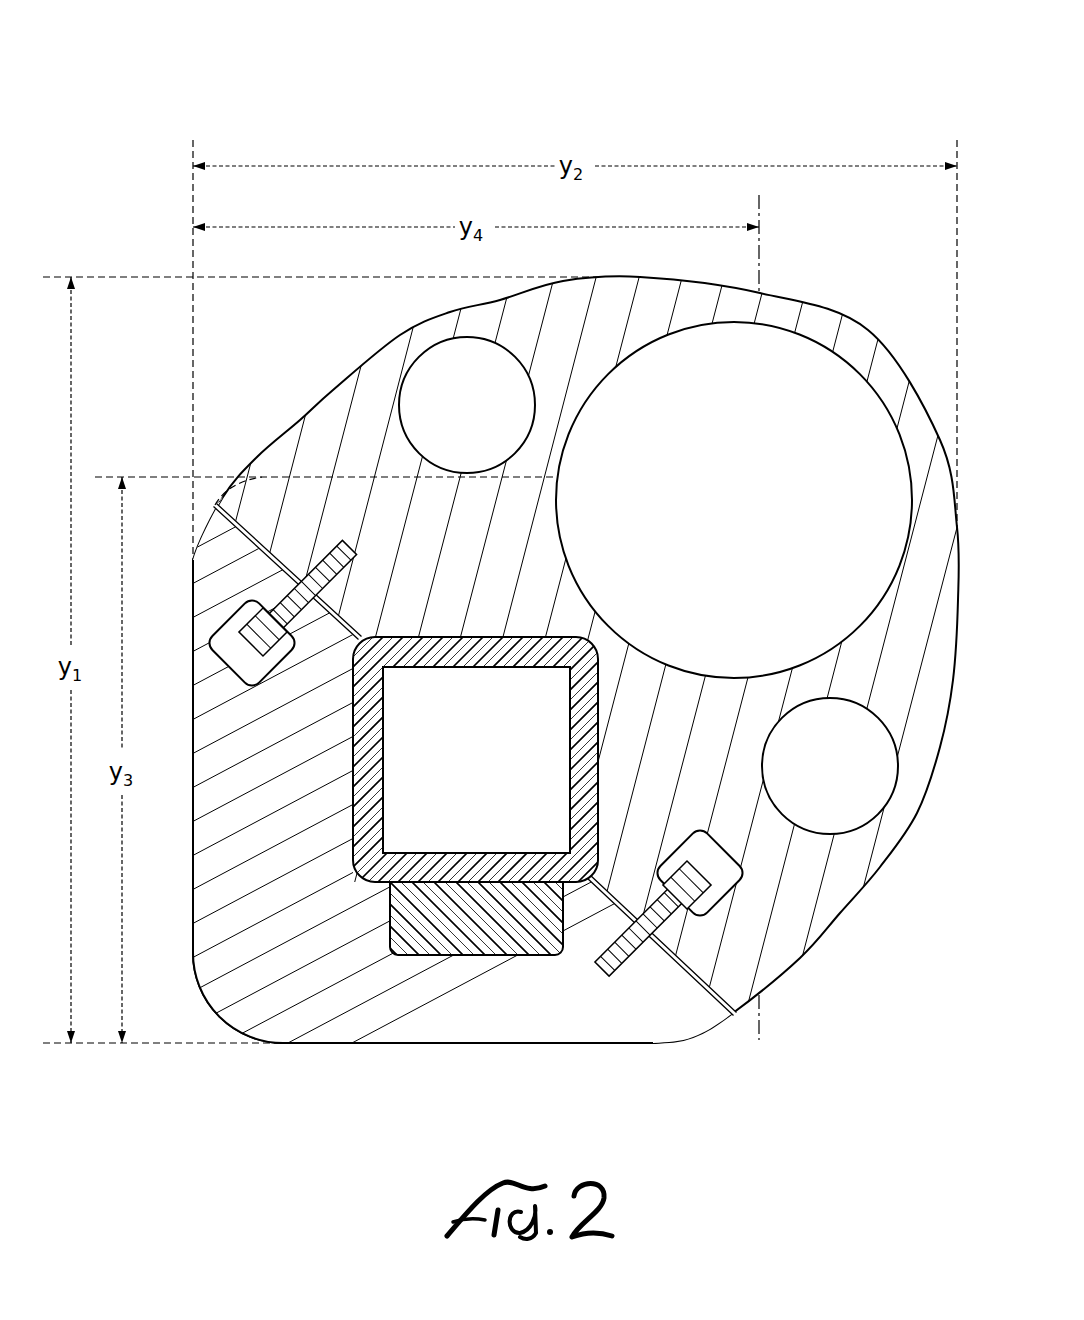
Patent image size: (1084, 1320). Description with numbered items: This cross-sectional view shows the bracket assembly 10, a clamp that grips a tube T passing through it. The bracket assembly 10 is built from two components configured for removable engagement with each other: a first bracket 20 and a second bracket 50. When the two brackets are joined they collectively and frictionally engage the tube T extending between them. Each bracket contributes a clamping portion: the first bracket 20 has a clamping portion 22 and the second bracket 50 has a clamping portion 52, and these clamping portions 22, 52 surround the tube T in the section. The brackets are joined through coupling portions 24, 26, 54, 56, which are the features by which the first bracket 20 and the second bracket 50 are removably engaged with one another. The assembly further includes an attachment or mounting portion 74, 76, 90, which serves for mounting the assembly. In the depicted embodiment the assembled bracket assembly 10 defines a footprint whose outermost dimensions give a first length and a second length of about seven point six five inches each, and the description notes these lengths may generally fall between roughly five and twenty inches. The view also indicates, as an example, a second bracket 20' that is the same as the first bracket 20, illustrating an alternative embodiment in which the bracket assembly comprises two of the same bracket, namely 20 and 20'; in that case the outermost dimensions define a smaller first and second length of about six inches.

The bracket assembly 10 is at (791, 76).
The first bracket 20 is at (465, 701).
The second identical bracket 20' is at (476, 531).
The clamping portion 22 is at (346, 822).
The coupling portion 24 is at (641, 962).
The coupling portion 26 is at (219, 611).
The second bracket 50 is at (852, 923).
The clamping portion 52 is at (568, 630).
The coupling portion 54 is at (319, 543).
The coupling portion 56 is at (737, 911).
The mounting portion 74 is at (447, 385).
The mounting portion 76 is at (812, 400).
The mounting portion 90 is at (529, 970).
The tube T is at (372, 770).